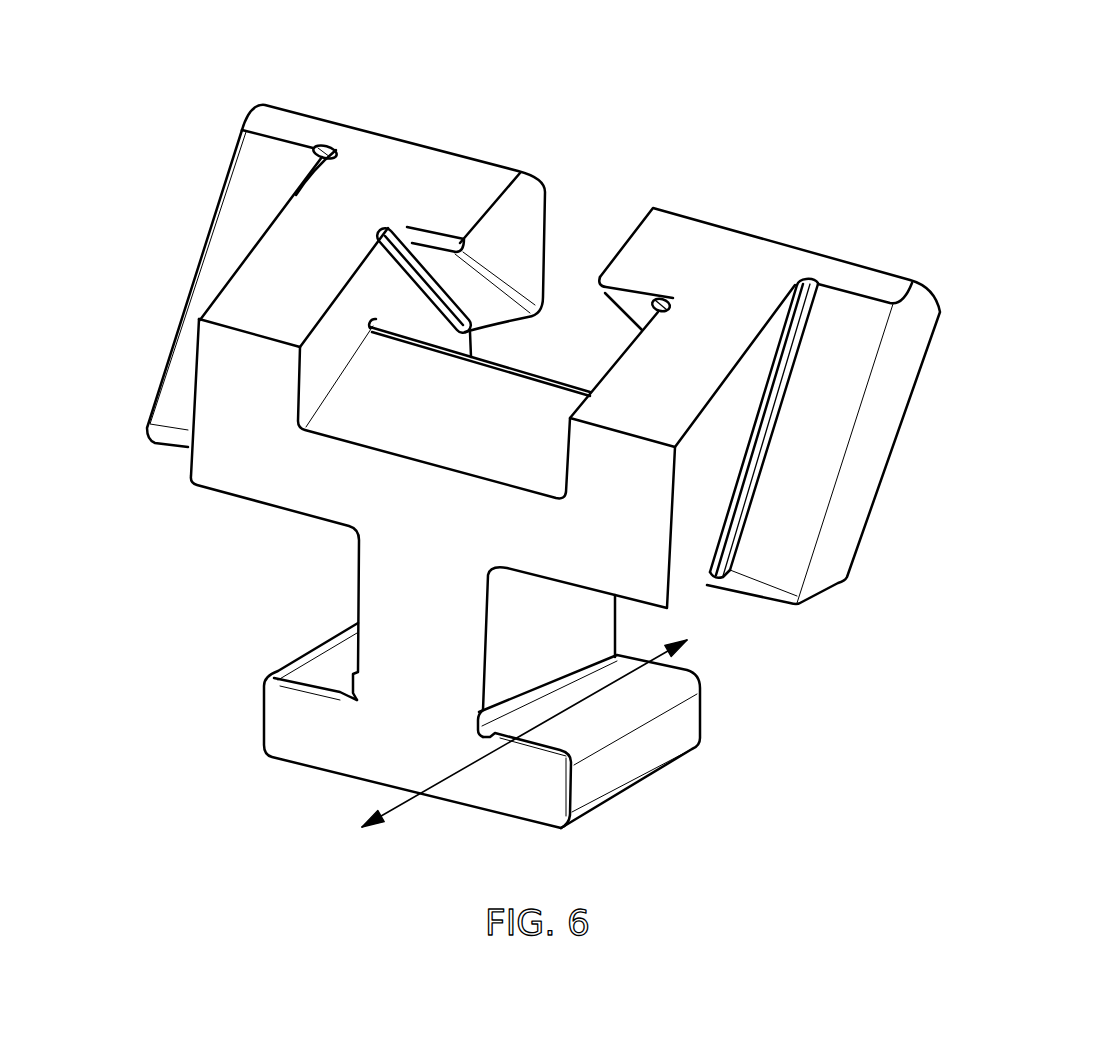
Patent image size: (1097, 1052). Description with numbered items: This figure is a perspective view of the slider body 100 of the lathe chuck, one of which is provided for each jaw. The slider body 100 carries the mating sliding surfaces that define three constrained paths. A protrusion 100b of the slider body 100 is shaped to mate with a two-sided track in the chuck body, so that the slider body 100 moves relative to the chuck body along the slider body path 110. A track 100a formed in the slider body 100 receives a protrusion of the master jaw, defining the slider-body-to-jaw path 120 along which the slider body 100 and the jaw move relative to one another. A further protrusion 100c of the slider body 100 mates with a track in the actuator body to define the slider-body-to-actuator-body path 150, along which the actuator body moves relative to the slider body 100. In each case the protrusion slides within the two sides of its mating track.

The slider body 100 is at (568, 461).
The track 100a is at (533, 272).
The protrusion 100b is at (200, 222).
The protrusion 100c is at (264, 714).
The slider body path 110 is at (735, 647).
The slider-body-to-jaw path 120 is at (516, 339).
The slider-body-to-actuator-body path 150 is at (393, 808).